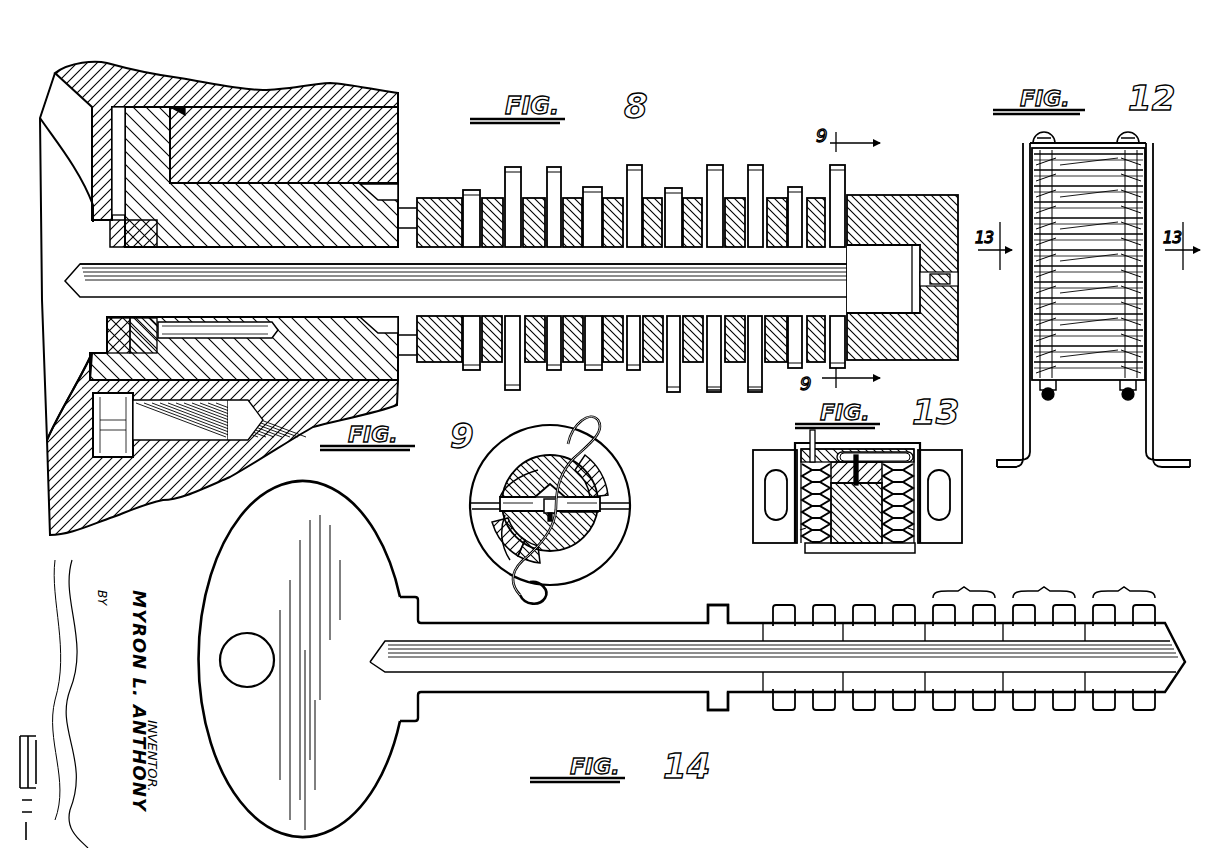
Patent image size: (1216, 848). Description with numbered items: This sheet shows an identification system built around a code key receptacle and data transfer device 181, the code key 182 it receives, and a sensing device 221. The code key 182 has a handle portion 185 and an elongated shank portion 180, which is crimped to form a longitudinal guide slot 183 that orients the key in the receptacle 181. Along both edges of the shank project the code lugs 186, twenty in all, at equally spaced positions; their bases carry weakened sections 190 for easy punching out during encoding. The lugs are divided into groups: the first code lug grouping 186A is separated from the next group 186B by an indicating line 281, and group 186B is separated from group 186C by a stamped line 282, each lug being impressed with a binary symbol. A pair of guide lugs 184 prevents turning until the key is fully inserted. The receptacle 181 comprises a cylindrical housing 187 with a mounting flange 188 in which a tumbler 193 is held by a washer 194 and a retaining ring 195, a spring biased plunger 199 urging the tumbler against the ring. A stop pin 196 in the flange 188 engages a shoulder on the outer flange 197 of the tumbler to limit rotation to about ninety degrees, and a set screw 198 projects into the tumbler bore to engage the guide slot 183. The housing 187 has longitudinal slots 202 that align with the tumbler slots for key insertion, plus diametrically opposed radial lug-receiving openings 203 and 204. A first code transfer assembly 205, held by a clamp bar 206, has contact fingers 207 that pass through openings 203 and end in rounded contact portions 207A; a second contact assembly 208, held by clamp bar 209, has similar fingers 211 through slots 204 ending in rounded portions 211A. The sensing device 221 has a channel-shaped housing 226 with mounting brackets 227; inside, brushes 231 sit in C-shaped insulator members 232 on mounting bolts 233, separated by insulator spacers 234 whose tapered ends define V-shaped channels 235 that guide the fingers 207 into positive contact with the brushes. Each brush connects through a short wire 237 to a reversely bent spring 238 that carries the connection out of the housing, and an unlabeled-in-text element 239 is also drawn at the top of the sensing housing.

In FIG. 8, the shank portion 180 is at (533, 200).
In FIG. 9, the shank portion 180 is at (655, 622).
In FIG. 14, the shank portion 180 is at (653, 636).
In FIG. 8, the code key receptacle and data transfer device 181 is at (725, 160).
In FIG. 9, the code key receptacle and data transfer device 181 is at (474, 558).
In FIG. 8, the code key 182 is at (372, 313).
In FIG. 9, the code key 182 is at (632, 505).
In FIG. 14, the code key 182 is at (556, 690).
In FIG. 8, the longitudinal guide slot 183 is at (540, 283).
In FIG. 8, the guide lugs 184 is at (407, 210).
In FIG. 14, the guide lugs 184 is at (738, 596).
In FIG. 8, the handle portion 185 is at (70, 191).
In FIG. 14, the handle portion 185 is at (372, 802).
In FIG. 14, the code lugs 186 is at (858, 600).
In FIG. 14, the code lug grouping 186A is at (1124, 584).
In FIG. 14, the code lug group 186B is at (1044, 584).
In FIG. 14, the code lug group 186C is at (964, 584).
In FIG. 8, the cylindrical housing 187 is at (338, 180).
In FIG. 9, the cylindrical housing 187 is at (485, 472).
In FIG. 8, the mounting flange 188 is at (158, 155).
In FIG. 14, the weakened sections 190 is at (920, 712).
In FIG. 8, the tumbler 193 is at (118, 232).
In FIG. 9, the tumbler 193 is at (592, 520).
In FIG. 8, the washer 194 is at (98, 352).
In FIG. 8, the retaining ring 195 is at (108, 340).
In FIG. 8, the stop pin 196 is at (118, 126).
In FIG. 8, the outer flange 197 is at (140, 348).
In FIG. 8, the set screw 198 is at (108, 300).
In FIG. 9, the set screw 198 is at (562, 520).
In FIG. 8, the spring biased plunger 199 is at (230, 340).
In FIG. 9, the longitudinal slots 202 is at (468, 505).
In FIG. 9, the radial lug-receiving openings 203 is at (510, 448).
In FIG. 9, the lug-receiving slots 204 is at (575, 570).
In FIG. 9, the first code transfer assembly 205 is at (496, 522).
In FIG. 9, the clamp bar 206 is at (500, 560).
In FIG. 8, the contact fingers 207 is at (680, 167).
In FIG. 9, the contact fingers 207 is at (570, 455).
In FIG. 9, the rounded contact portion 207A is at (584, 414).
In FIG. 9, the second contact assembly 208 is at (604, 508).
In FIG. 9, the clamp bar 209 is at (596, 466).
In FIG. 8, the contact fingers 211 is at (750, 410).
In FIG. 9, the contact fingers 211 is at (552, 548).
In FIG. 9, the rounded contact portion 211A is at (520, 600).
In FIG. 13, the sensing device 221 is at (750, 542).
In FIG. 12, the sensing device 221 is at (1102, 435).
In FIG. 13, the channel-shaped housing 226 is at (912, 448).
In FIG. 12, the channel-shaped housing 226 is at (1024, 396).
In FIG. 13, the mounting brackets 227 is at (762, 464).
In FIG. 12, the mounting brackets 227 is at (1002, 455).
In FIG. 13, the sensing elements or brushes 231 is at (860, 545).
In FIG. 12, the sensing elements or brushes 231 is at (1046, 224).
In FIG. 13, the C-shaped insulator member 232 is at (806, 545).
In FIG. 12, the C-shaped insulator member 232 is at (1030, 292).
In FIG. 13, the mounting bolts 233 is at (806, 514).
In FIG. 12, the mounting bolts 233 is at (1128, 398).
In FIG. 12, the insulator spacers 234 is at (1068, 303).
In FIG. 13, the V-shaped channels 235 is at (888, 545).
In FIG. 12, the V-shaped channels 235 is at (1132, 312).
In FIG. 13, the wire 237 is at (875, 460).
In FIG. 13, the reversely bent spring 238 is at (832, 462).
In FIG. 13, the actuating pin 239 is at (808, 437).
In FIG. 14, the indicating line 281 is at (1092, 629).
In FIG. 14, the stamped line 282 is at (1012, 634).